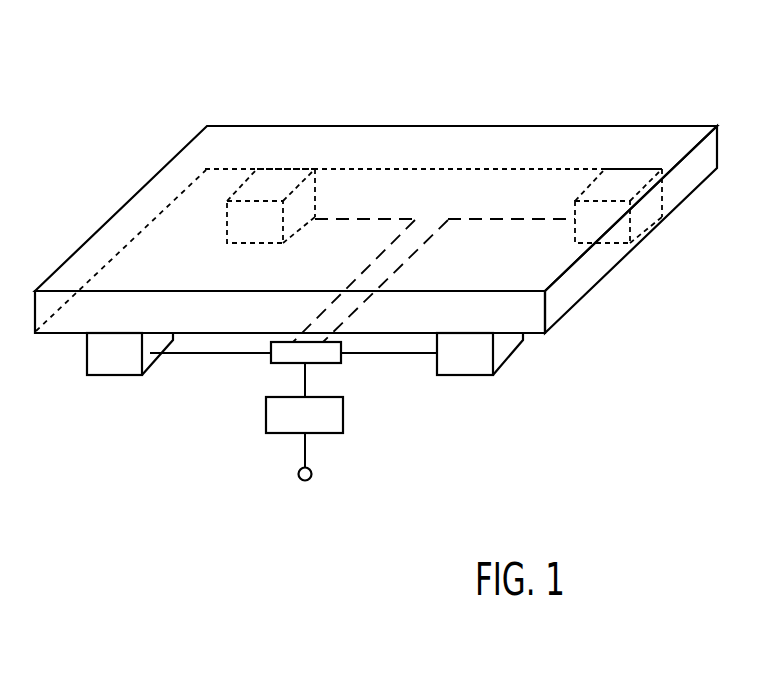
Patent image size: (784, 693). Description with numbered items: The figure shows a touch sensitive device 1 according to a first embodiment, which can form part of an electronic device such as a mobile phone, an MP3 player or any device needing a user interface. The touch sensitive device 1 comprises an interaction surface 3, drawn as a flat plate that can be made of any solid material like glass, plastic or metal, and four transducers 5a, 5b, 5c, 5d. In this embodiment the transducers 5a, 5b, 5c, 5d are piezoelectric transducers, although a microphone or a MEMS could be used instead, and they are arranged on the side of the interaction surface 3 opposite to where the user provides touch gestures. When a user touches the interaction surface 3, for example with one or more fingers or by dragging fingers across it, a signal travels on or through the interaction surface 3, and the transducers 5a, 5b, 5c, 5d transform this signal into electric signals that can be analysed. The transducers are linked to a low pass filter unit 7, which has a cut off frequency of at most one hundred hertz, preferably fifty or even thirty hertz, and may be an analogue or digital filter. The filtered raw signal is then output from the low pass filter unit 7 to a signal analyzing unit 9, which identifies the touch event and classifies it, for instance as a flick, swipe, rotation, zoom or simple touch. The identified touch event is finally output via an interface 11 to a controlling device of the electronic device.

The touch sensitive device 1 is at (236, 79).
The interaction surface 3 is at (460, 148).
The transducer 5a is at (115, 375).
The transducer 5b is at (455, 375).
The transducer 5c is at (625, 222).
The transducer 5d is at (243, 219).
The low pass filter unit 7 is at (271, 360).
The signal analyzing unit 9 is at (266, 427).
The interface 11 is at (322, 462).